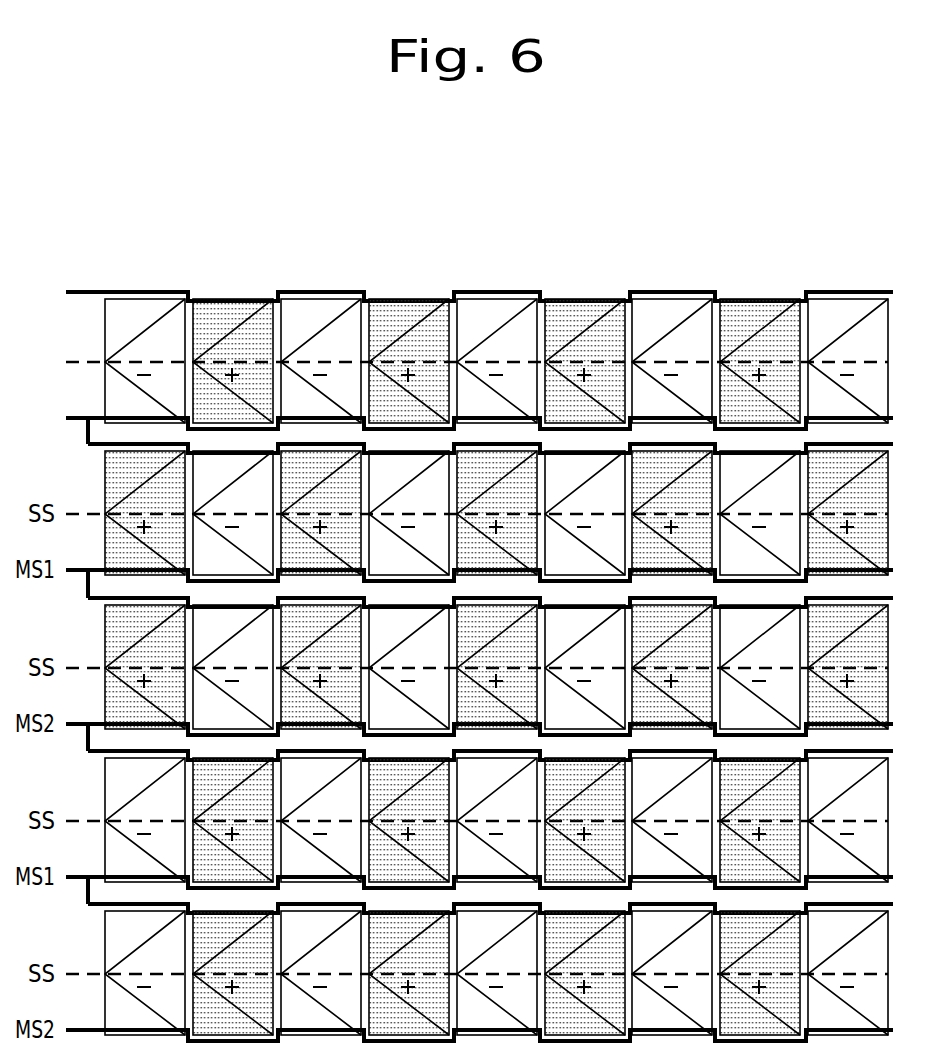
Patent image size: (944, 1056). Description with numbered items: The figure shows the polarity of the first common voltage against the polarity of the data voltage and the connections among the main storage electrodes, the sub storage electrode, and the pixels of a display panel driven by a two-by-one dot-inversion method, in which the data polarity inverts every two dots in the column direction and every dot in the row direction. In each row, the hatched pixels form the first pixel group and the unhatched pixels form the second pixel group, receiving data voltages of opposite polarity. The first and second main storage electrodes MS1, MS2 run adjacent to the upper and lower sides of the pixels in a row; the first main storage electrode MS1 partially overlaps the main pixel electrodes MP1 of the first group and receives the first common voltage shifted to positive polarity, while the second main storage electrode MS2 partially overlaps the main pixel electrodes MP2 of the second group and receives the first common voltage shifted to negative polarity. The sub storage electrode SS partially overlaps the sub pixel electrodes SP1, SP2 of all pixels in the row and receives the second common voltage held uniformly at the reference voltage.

The main pixel electrode MP2 is at (137, 324).
The sub pixel electrode SP2 is at (148, 324).
The main pixel electrode MP1 is at (233, 324).
The sub pixel electrode SP1 is at (252, 324).
The first main storage electrode MS1 is at (454, 292).
The second main storage electrode MS2 is at (454, 418).
The sub storage electrode SS is at (458, 362).